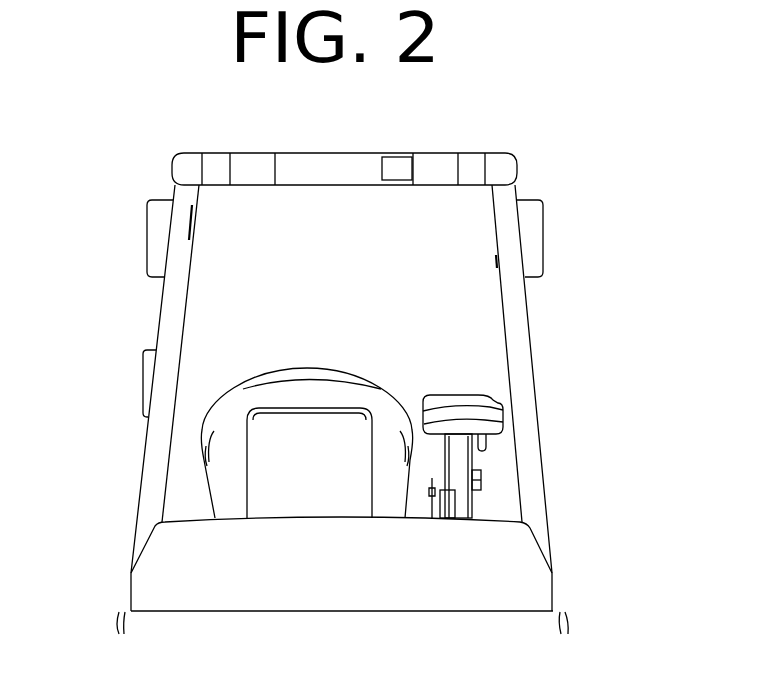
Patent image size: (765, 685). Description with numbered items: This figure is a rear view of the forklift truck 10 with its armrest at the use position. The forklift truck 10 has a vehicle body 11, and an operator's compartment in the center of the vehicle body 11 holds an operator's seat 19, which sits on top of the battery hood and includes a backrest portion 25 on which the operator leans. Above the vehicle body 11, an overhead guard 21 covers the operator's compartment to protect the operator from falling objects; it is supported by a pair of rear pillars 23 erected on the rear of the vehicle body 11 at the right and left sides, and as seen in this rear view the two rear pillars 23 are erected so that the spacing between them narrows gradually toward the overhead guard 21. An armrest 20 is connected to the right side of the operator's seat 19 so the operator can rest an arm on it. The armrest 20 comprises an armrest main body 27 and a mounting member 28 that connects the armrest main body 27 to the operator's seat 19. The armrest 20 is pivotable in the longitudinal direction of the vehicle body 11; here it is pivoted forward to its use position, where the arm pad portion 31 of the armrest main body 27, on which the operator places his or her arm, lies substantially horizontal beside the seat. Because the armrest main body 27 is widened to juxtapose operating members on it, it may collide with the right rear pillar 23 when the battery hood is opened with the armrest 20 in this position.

The forklift truck 10 is at (612, 145).
The vehicle body 11 is at (148, 580).
The operator's seat 19 is at (241, 358).
The armrest 20 is at (488, 345).
The overhead guard 21 is at (316, 163).
The rear pillars 23 is at (166, 316).
The backrest portion 25 is at (374, 404).
The armrest main body 27 is at (503, 427).
The mounting member 28 is at (491, 470).
The arm pad portion 31 is at (447, 394).